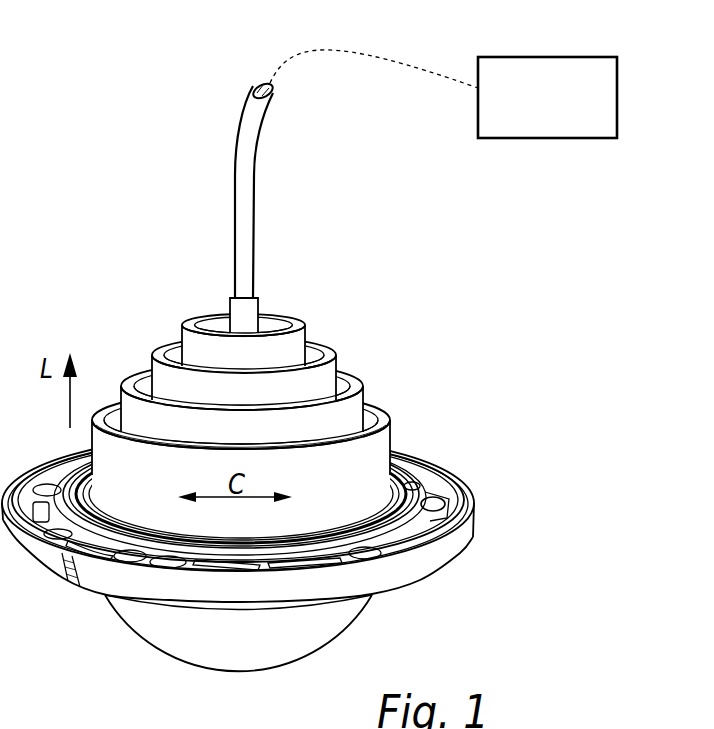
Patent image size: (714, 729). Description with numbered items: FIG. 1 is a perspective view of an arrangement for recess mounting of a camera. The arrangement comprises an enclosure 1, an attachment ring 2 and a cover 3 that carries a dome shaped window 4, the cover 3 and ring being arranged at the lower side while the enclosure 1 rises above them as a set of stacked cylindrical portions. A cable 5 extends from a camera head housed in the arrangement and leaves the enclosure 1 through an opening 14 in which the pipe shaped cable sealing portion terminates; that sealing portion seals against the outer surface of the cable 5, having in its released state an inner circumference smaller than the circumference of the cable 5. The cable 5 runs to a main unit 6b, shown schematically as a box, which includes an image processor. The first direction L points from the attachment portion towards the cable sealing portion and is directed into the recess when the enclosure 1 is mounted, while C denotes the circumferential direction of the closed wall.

The enclosure 1 is at (338, 342).
The attachment ring 2 is at (443, 478).
The cover 3 is at (445, 547).
The dome shaped window 4 is at (352, 622).
The cable 5 is at (255, 207).
The main unit 6b is at (566, 138).
The opening 14 is at (297, 728).